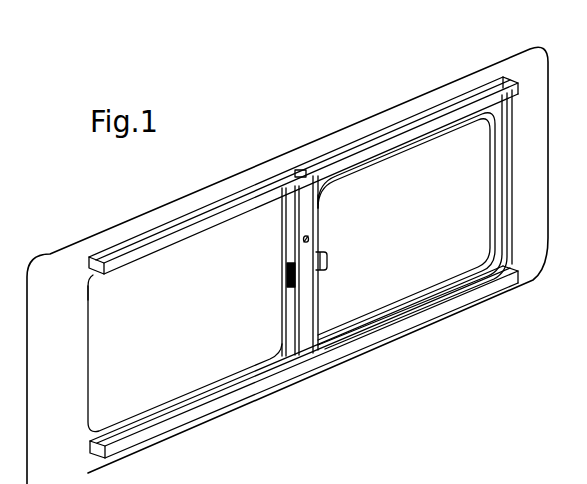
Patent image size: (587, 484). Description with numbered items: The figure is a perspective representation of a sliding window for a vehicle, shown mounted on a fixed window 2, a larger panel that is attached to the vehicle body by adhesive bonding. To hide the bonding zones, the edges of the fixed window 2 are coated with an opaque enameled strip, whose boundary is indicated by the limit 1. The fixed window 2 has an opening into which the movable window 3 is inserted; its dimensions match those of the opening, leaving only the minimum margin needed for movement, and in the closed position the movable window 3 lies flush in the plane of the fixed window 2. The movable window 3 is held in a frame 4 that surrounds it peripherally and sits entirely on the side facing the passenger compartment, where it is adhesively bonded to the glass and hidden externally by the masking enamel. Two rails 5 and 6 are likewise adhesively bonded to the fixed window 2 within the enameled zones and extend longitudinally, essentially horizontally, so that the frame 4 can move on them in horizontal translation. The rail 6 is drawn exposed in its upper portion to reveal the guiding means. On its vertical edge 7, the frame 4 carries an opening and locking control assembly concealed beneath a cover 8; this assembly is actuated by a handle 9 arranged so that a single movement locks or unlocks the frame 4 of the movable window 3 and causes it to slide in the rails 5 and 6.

The limit of the opaque enameled strip 1 is at (87, 356).
The fixed window 2 is at (171, 347).
The movable window 3 is at (394, 230).
The frame 4 is at (437, 290).
The rail 5 is at (258, 385).
The rail 6 is at (165, 230).
The vertical edge 7 is at (318, 218).
The cover 8 is at (312, 320).
The handle 9 is at (326, 265).